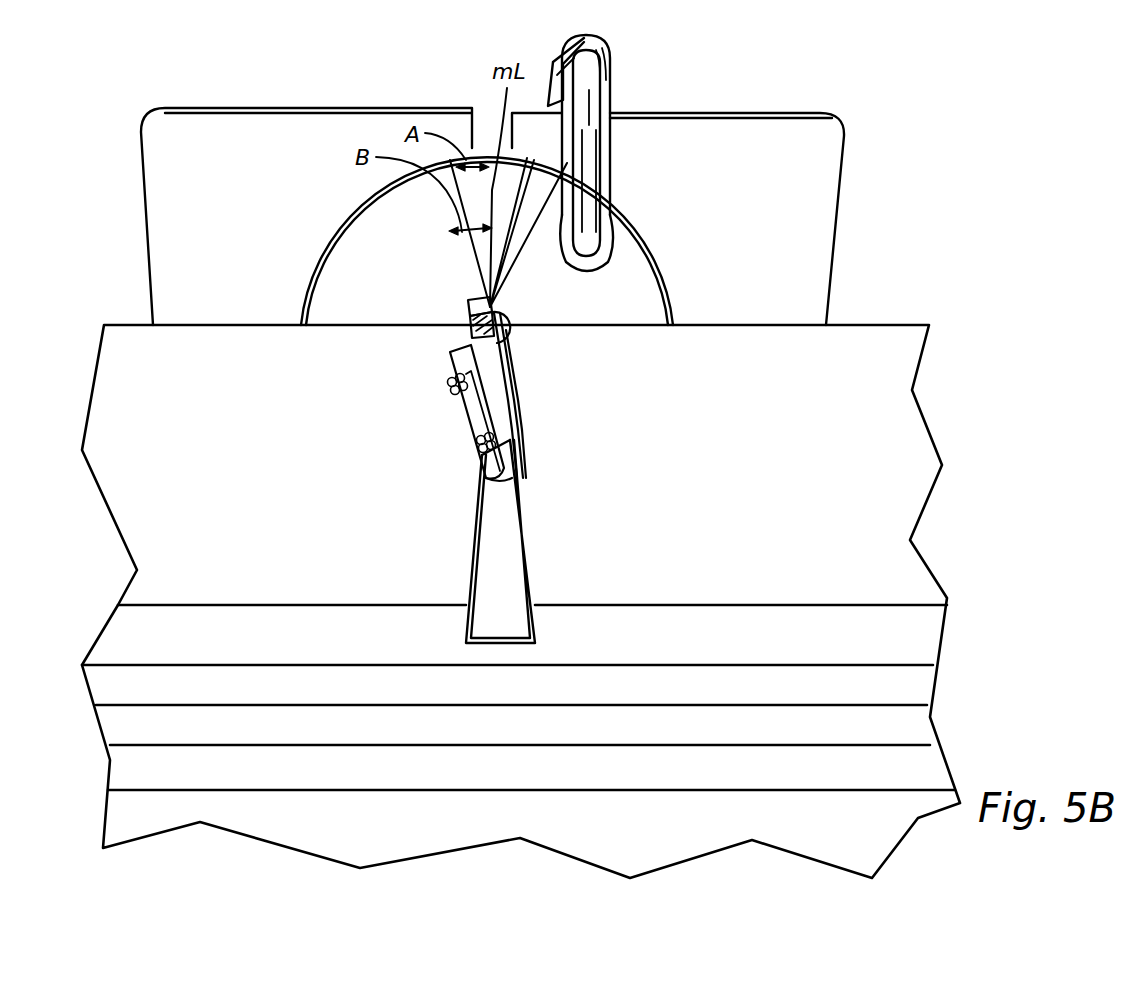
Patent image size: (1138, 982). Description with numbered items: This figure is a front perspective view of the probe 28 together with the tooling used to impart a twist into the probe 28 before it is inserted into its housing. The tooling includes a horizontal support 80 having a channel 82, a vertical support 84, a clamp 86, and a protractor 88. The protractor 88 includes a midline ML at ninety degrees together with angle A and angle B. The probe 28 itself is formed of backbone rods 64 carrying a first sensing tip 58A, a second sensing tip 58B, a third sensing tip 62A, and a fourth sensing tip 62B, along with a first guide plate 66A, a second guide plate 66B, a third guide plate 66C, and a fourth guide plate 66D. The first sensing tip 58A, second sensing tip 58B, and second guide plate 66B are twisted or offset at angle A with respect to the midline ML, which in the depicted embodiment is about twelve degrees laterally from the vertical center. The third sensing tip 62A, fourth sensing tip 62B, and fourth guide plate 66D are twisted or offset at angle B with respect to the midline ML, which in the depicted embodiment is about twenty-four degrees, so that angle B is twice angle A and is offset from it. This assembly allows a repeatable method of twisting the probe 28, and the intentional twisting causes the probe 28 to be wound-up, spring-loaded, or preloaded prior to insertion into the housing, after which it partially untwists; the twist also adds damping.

The probe 28 is at (456, 440).
The first sensing tip 58A is at (465, 321).
The second sensing tip 58B is at (466, 332).
The third sensing tip 62A is at (448, 383).
The fourth sensing tip 62B is at (457, 395).
The backbone rods 64 is at (510, 476).
The first guide plate 66A is at (492, 303).
The second guide plate 66B is at (488, 340).
The third guide plate 66C is at (490, 373).
The fourth guide plate 66D is at (482, 415).
The horizontal support 80 is at (521, 601).
The channel 82 is at (500, 566).
The vertical support 84 is at (492, 216).
The clamp 86 is at (583, 75).
The protractor 88 is at (487, 241).